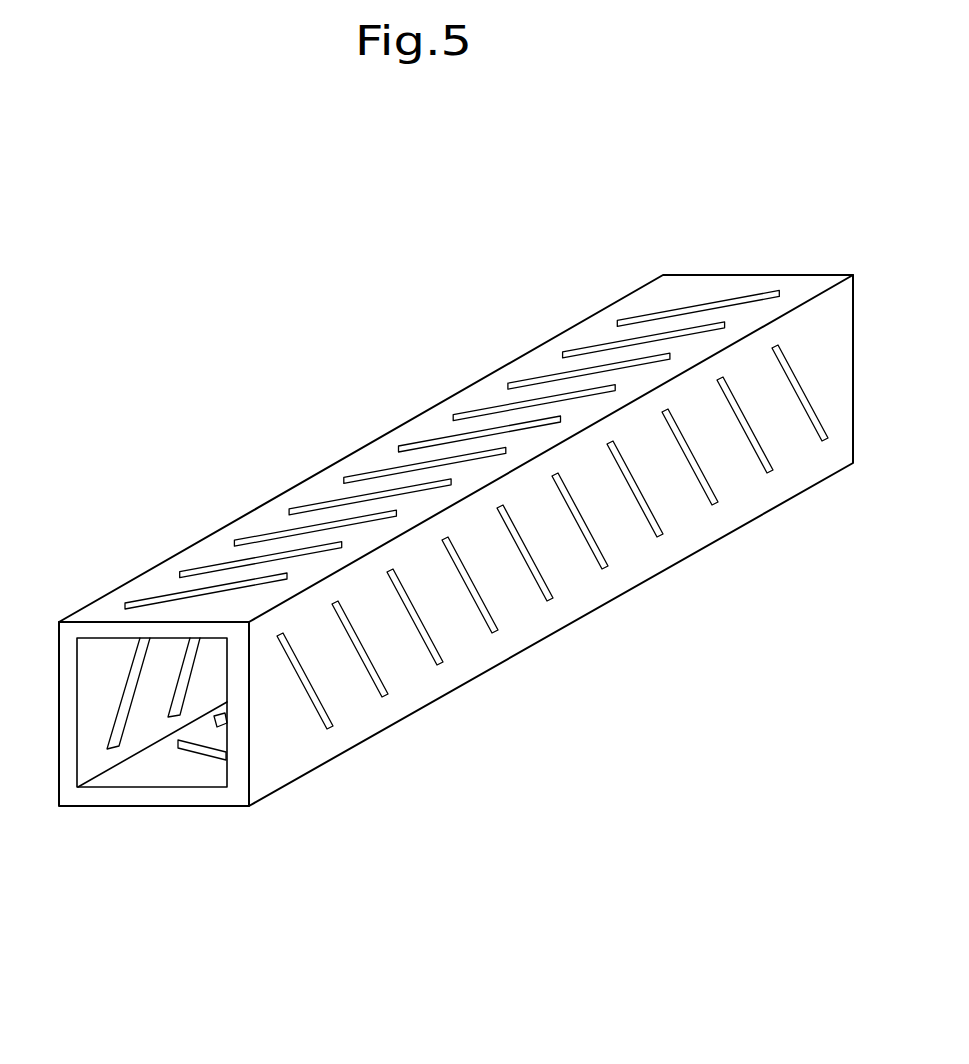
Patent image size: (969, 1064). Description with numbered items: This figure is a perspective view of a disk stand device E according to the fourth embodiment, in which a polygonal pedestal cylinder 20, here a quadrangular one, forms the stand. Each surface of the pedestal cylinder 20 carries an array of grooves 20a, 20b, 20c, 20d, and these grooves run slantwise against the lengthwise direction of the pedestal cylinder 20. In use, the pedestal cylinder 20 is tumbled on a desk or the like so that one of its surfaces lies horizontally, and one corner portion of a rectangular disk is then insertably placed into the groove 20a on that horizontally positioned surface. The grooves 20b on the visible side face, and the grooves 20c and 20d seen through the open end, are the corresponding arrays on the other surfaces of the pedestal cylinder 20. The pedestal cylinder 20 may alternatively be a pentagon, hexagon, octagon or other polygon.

The pedestal cylinder 20 is at (817, 282).
The groove 20a is at (157, 597).
The groove 20b is at (492, 626).
The groove 20c is at (213, 724).
The groove 20d is at (172, 718).
The disk stand device E is at (607, 297).